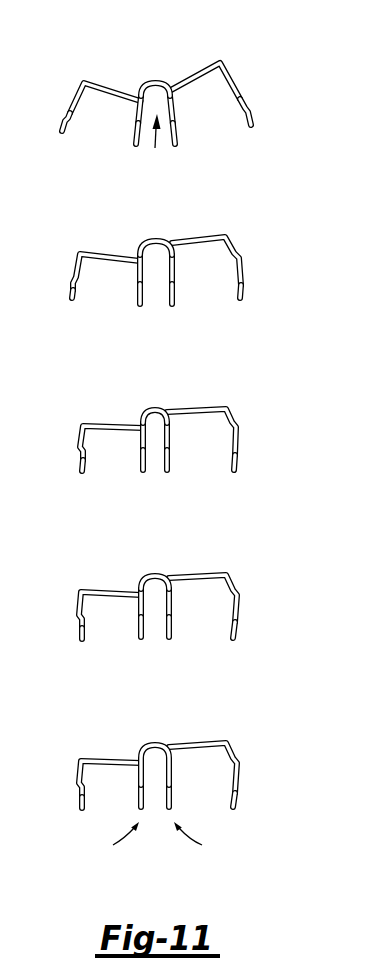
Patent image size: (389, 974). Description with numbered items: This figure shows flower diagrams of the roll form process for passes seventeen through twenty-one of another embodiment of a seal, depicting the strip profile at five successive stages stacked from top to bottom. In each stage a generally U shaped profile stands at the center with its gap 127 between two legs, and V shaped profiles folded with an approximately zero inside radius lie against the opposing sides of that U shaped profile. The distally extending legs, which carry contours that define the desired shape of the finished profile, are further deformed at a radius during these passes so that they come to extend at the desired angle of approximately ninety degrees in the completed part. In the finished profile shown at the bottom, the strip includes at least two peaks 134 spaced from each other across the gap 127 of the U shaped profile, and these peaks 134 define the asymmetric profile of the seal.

The gap 127 is at (156, 145).
The peaks 134 is at (157, 839).